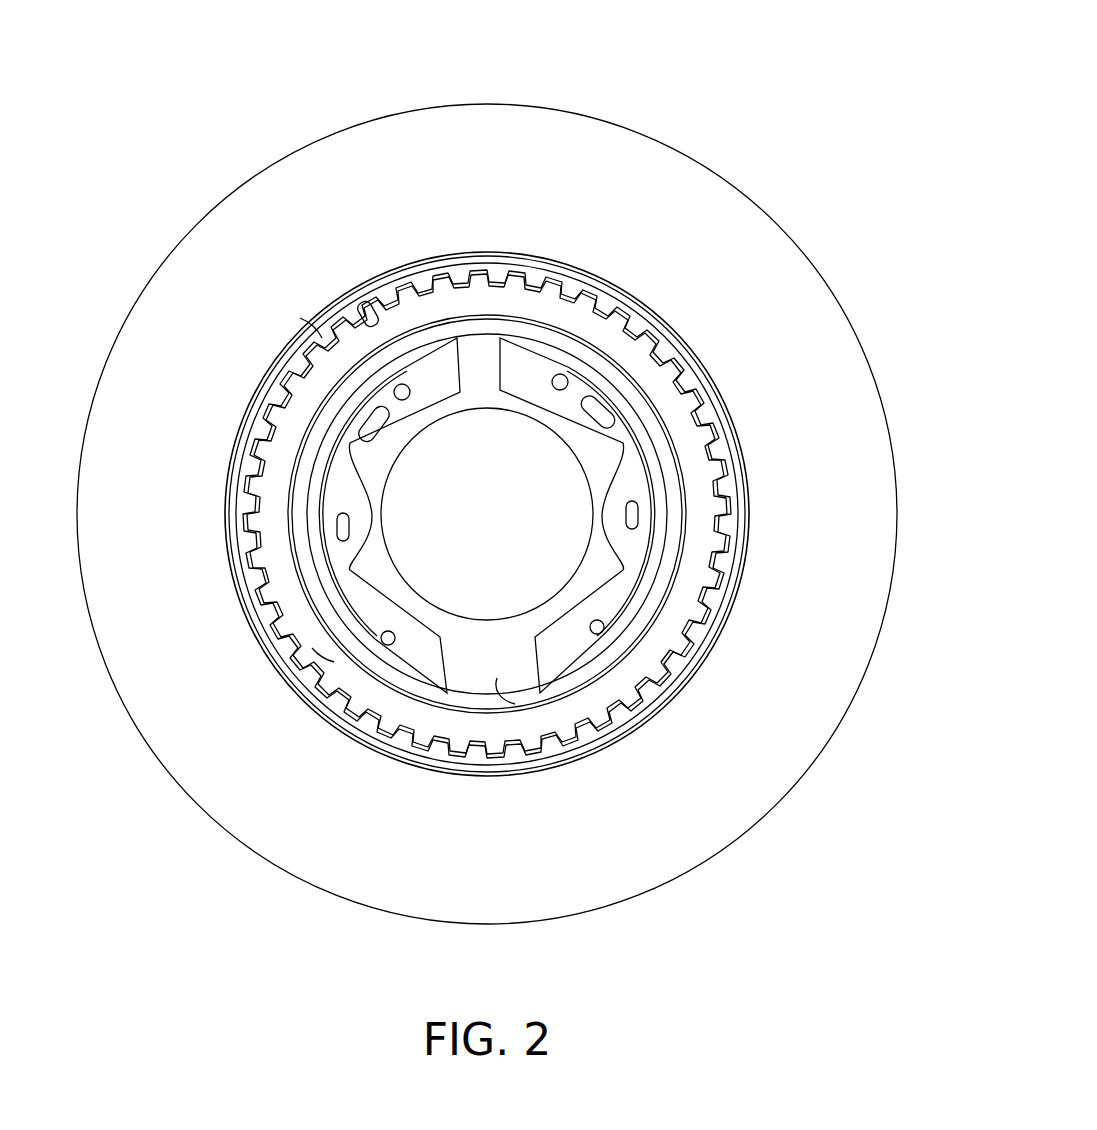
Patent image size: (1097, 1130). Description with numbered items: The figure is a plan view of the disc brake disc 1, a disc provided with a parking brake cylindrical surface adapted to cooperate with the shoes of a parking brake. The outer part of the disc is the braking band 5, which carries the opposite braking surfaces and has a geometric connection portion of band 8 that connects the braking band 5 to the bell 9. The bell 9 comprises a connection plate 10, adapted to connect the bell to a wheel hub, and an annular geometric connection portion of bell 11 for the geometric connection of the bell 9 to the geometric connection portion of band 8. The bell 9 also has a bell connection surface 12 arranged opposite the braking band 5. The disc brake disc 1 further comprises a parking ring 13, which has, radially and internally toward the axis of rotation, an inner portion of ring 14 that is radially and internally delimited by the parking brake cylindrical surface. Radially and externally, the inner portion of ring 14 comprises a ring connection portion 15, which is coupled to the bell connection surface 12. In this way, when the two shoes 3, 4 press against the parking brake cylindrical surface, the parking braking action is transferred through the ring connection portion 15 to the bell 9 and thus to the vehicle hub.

The disc brake disc 1 is at (755, 121).
The shoe 3 is at (576, 386).
The shoe 4 is at (330, 503).
The braking band 5 is at (820, 380).
The geometric connection portion of band 8 is at (282, 362).
The bell 9 is at (500, 688).
The connection plate 10 is at (592, 570).
The annular geometric connection portion of bell 11 is at (312, 328).
The bell connection surface 12 is at (373, 305).
The parking ring 13 is at (326, 655).
The inner portion of ring 14 is at (687, 535).
The ring connection portion 15 is at (700, 617).